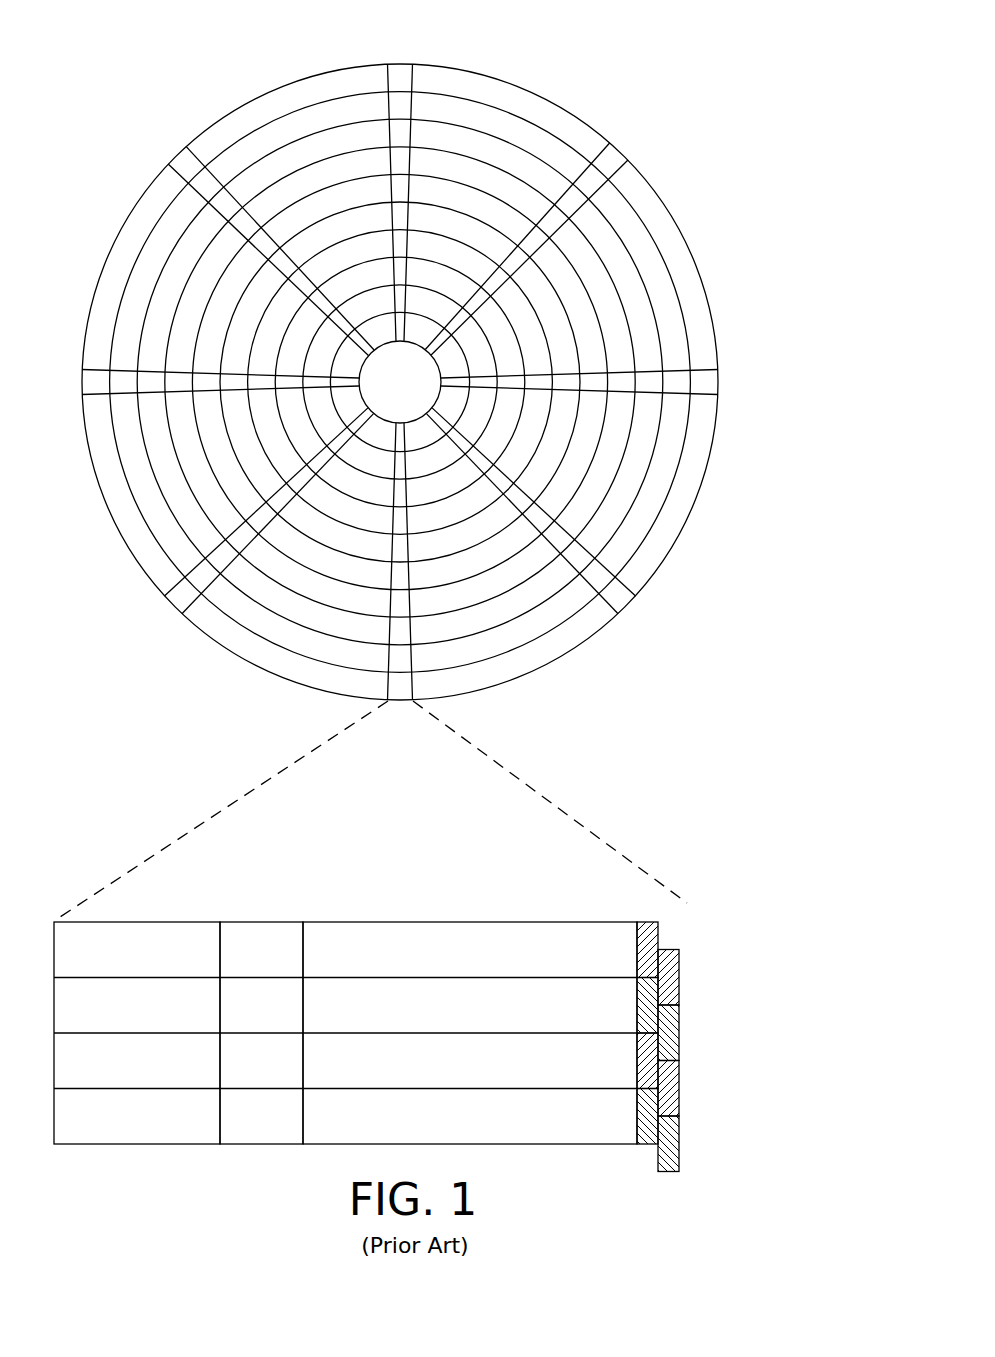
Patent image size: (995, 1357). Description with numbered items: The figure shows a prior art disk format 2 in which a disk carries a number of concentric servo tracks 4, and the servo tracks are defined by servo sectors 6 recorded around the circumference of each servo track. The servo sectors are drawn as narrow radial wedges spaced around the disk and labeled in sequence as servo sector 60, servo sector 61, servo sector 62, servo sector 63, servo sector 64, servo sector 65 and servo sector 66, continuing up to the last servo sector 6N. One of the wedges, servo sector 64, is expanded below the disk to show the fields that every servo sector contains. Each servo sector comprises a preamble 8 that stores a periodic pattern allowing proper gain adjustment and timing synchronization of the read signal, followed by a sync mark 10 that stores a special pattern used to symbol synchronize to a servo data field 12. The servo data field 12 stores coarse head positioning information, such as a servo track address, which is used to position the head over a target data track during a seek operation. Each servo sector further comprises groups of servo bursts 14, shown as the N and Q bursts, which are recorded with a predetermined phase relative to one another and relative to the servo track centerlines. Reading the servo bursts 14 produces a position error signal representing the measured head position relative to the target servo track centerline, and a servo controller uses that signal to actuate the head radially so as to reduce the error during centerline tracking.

The disk format 2 is at (166, 68).
The servo tracks 4 is at (531, 110).
The servo sectors 6 is at (401, 392).
The servo sector 60 is at (399, 73).
The servo sector 61 is at (618, 165).
The servo sector 62 is at (712, 383).
The servo sector 63 is at (618, 600).
The servo sector 64 is at (263, 779).
The servo sector 65 is at (182, 600).
The servo sector 66 is at (88, 382).
The servo sector 6N is at (182, 163).
The preamble 8 is at (145, 921).
The sync mark 10 is at (265, 921).
The servo data field 12 is at (457, 921).
The servo bursts 14 is at (674, 919).